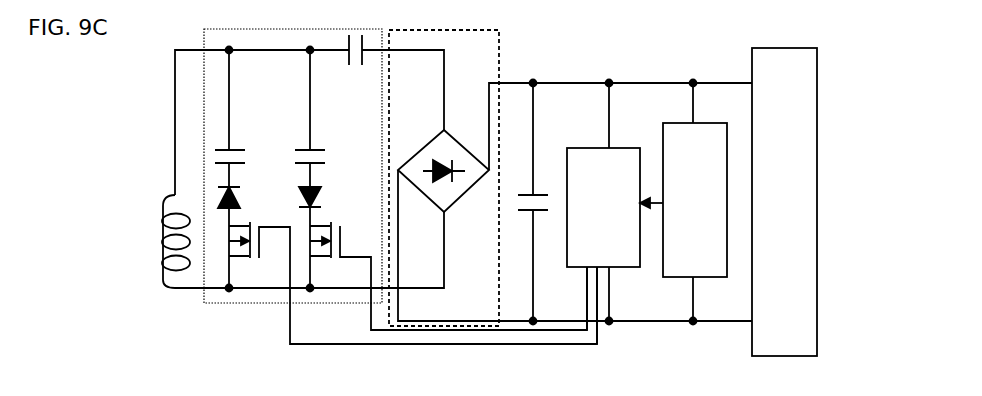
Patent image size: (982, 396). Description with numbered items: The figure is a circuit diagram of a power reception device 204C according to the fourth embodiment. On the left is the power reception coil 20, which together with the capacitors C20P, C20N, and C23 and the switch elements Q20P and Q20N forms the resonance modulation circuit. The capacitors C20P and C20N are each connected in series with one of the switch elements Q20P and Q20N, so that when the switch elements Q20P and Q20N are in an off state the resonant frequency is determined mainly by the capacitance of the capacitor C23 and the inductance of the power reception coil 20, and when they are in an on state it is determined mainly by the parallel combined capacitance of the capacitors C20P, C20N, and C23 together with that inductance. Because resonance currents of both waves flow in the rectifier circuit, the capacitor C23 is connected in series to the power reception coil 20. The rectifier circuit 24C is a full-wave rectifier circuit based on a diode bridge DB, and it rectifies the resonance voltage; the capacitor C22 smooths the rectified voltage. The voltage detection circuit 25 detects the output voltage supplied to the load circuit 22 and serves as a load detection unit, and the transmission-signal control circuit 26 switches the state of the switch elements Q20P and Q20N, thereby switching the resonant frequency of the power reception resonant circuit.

The power reception coil 20 is at (175, 198).
The load circuit 22 is at (781, 47).
The rectifier circuit 24C is at (499, 29).
The voltage detection circuit 25 is at (706, 122).
The transmission-signal control circuit 26 is at (622, 147).
The power reception device 204C is at (893, 78).
The switch element Q20N is at (215, 272).
The switch element Q20P is at (324, 274).
The capacitor C20N is at (254, 119).
The capacitor C20P is at (335, 119).
The capacitor C23 is at (349, 66).
The capacitor C22 is at (538, 190).
The diode bridge DB is at (575, 202).